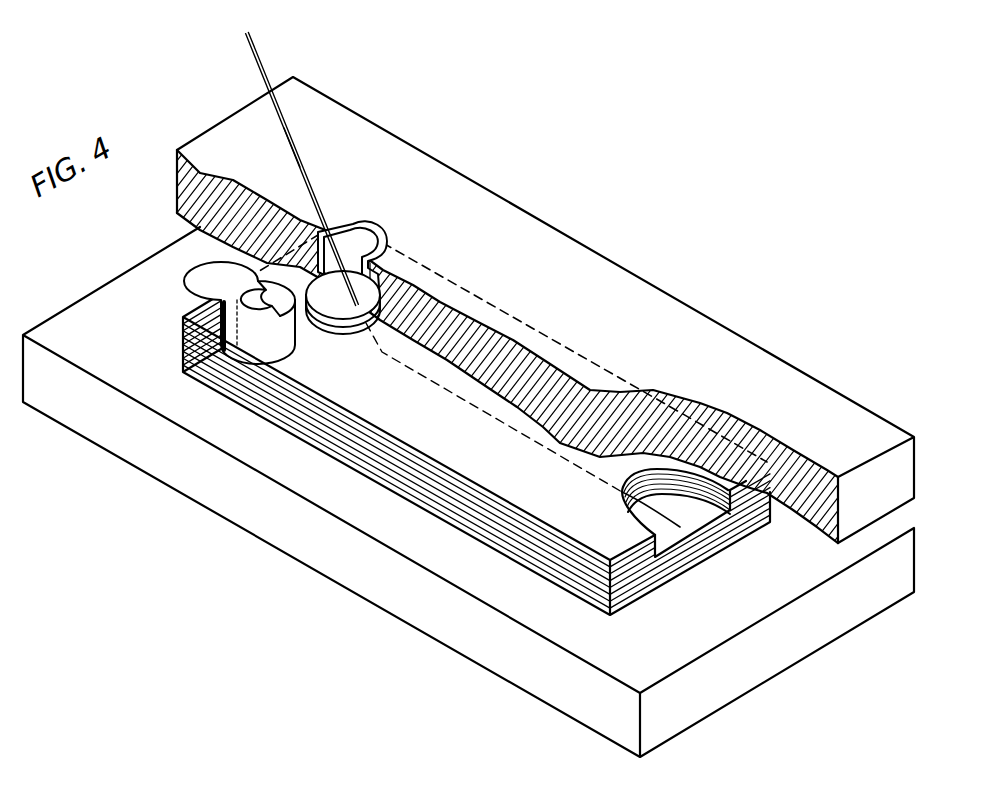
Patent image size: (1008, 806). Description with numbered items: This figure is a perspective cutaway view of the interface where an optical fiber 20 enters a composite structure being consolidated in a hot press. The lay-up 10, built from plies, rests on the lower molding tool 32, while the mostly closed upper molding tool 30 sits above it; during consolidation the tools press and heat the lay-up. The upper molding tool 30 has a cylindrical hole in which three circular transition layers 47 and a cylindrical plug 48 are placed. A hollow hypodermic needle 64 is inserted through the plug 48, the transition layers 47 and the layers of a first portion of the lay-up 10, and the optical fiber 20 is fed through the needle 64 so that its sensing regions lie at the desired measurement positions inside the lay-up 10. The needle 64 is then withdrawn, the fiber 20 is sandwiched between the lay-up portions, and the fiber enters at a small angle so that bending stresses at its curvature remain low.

The lay-up 10 is at (560, 486).
The optical fiber 20 is at (252, 54).
The upper molding tool 30 is at (558, 278).
The lower molding tool 32 is at (650, 644).
The transition layers 47 is at (318, 322).
The cylindrical plug 48 is at (238, 288).
The hypodermic needle 64 is at (291, 141).